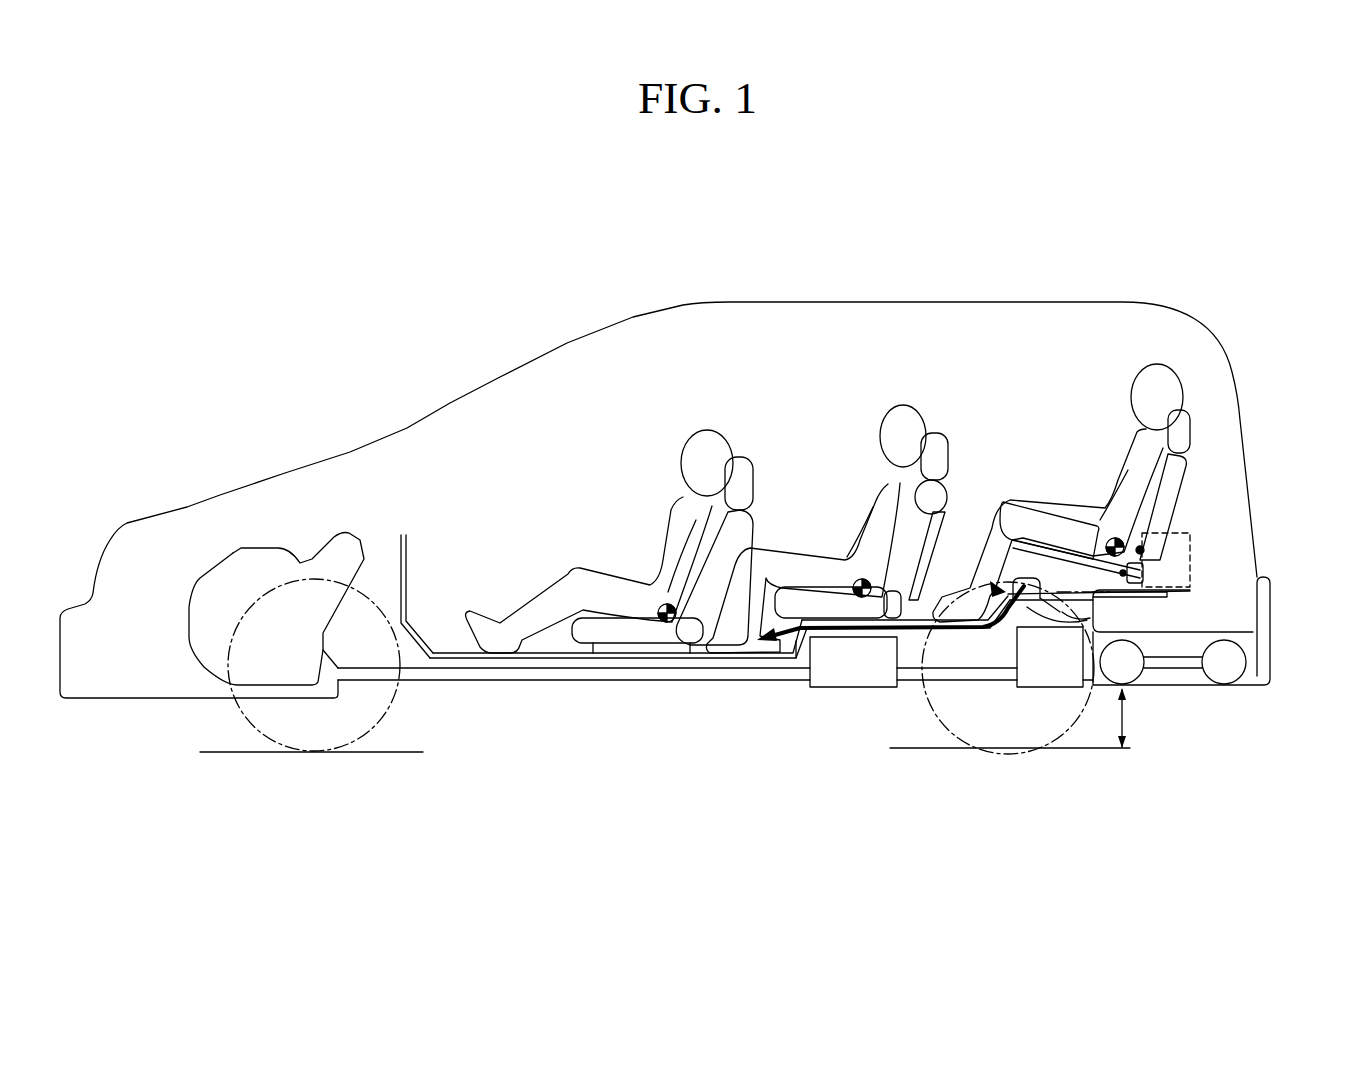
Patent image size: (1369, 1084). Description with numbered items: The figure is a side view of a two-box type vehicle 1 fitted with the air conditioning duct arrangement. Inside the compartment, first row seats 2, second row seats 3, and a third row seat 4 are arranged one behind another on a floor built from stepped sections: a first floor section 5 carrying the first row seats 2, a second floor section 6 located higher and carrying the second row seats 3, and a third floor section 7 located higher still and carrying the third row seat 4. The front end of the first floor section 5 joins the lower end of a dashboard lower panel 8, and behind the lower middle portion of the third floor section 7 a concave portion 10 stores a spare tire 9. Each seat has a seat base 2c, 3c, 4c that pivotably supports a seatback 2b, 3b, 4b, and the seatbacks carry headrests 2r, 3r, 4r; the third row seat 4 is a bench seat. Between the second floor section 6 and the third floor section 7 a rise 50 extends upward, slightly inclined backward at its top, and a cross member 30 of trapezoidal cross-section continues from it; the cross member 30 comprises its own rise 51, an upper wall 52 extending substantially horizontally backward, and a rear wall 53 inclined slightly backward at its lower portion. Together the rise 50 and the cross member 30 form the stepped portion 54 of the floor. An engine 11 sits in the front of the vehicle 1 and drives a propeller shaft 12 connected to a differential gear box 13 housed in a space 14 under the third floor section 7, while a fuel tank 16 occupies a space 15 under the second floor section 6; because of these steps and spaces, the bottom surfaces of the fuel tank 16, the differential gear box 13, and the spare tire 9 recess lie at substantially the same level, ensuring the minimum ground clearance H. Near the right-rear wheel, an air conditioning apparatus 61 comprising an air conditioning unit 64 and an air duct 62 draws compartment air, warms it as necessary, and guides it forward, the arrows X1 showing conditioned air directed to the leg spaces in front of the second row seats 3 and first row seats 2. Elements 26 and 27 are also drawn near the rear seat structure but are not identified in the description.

The vehicle 1 is at (1076, 286).
The first row seats 2 is at (743, 436).
The headrest 2r is at (698, 494).
The seatback 2b is at (707, 560).
The seat base 2c is at (613, 637).
The second row seats 3 is at (936, 418).
The headrest 3r is at (930, 453).
The seatback 3b is at (915, 527).
The seat base 3c is at (800, 593).
The third row seat 4 is at (1196, 400).
The headrest 4r is at (1181, 436).
The seatback 4b is at (1167, 478).
The seat base 4c is at (1073, 537).
The first floor section 5 is at (458, 652).
The second floor section 6 is at (907, 619).
The third floor section 7 is at (1046, 592).
The dashboard lower panel 8 is at (421, 636).
The spare tire 9 is at (1232, 668).
The concave portion 10 is at (1243, 620).
The engine 11 is at (234, 553).
The propeller shaft 12 is at (670, 681).
The differential gear box 13 is at (1028, 688).
The space 14 is at (1070, 617).
The space 15 is at (800, 661).
The fuel tank 16 is at (833, 688).
The rear side frame 26 is at (1178, 630).
The seat bracket 27 is at (1143, 548).
The cross member 30 is at (1047, 601).
The rise 50 is at (1000, 622).
The rise 51 is at (993, 584).
The upper wall 52 is at (1030, 592).
The rear wall 53 is at (1056, 590).
The stepped portion 54 is at (933, 697).
The air conditioning apparatus 61 is at (1163, 612).
The air duct 62 is at (1062, 598).
The air conditioning unit 64 is at (1180, 553).
The arrows X1 is at (755, 661).
The minimum ground clearance H is at (1135, 718).